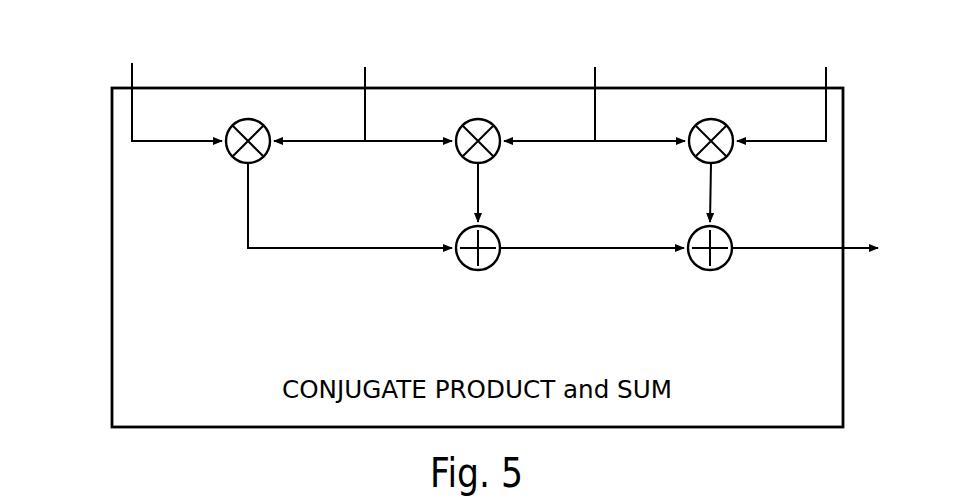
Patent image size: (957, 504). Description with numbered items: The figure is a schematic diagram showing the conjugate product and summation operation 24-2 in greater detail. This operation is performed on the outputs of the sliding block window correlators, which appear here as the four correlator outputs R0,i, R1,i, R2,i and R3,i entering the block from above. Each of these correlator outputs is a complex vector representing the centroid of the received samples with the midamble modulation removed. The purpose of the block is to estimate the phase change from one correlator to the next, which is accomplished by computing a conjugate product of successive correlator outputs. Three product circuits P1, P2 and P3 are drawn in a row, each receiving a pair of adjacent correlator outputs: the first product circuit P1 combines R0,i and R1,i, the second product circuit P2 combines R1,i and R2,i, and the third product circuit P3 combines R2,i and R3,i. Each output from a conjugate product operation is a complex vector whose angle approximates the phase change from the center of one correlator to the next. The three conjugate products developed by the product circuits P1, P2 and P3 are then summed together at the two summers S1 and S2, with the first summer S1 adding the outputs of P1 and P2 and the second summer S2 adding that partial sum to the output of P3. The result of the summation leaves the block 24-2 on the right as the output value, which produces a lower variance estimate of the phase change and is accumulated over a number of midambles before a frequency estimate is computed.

The conjugate product and sum block 24-2 is at (112, 228).
The product circuit P1 is at (264, 121).
The product circuit P2 is at (494, 121).
The product circuit P3 is at (727, 121).
The summer S1 is at (488, 268).
The summer S2 is at (720, 268).
The correlator output R0,i is at (163, 86).
The correlator output R1,i is at (363, 86).
The correlator output R2,i is at (594, 86).
The correlator output R3,i is at (788, 86).